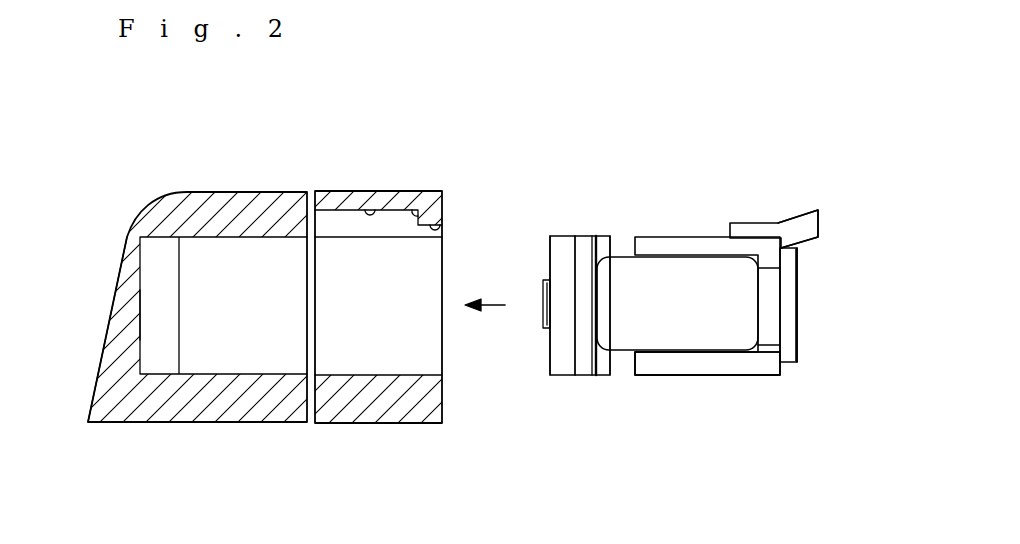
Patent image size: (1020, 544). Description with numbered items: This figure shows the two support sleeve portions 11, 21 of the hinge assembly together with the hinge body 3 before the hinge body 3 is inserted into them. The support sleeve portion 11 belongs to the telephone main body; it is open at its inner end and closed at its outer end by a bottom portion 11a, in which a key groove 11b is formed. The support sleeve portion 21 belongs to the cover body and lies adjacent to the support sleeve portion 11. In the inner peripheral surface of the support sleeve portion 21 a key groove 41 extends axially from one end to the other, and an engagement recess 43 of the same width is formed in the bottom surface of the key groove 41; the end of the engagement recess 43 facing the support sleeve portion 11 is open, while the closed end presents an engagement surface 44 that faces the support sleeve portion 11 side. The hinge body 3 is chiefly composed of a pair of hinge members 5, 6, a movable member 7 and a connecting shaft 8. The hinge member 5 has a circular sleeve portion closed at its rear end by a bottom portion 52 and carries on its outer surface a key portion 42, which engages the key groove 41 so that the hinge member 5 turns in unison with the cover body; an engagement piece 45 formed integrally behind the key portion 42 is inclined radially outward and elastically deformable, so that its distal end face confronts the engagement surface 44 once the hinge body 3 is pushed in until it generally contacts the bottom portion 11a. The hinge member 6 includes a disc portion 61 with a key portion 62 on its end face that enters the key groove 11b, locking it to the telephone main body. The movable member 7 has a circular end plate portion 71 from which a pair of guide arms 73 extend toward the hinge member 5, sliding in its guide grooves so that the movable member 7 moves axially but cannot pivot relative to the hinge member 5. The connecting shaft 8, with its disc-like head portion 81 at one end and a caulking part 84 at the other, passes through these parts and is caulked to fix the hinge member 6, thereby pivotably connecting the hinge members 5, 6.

The support sleeve portion 11 is at (217, 423).
The bottom portion 11a is at (125, 262).
The key groove 11b is at (140, 322).
The support sleeve portion 21 is at (372, 424).
The engagement recess 43 is at (370, 205).
The engagement surface 44 is at (418, 210).
The key groove 41 is at (441, 228).
The hinge member 6 is at (586, 237).
The key portion 62 is at (560, 363).
The disc portion 61 is at (583, 363).
The end plate portion 71 is at (603, 236).
The caulking part 84 is at (543, 312).
The guide arm 73 is at (653, 327).
The hinge member 5 is at (696, 237).
The bottom portion 52 is at (768, 283).
The movable member 7 is at (719, 352).
The hinge body 3 is at (673, 376).
The connecting shaft 8 is at (798, 348).
The head portion 81 is at (797, 328).
The key portion 42 is at (750, 224).
The engagement piece 45 is at (802, 226).